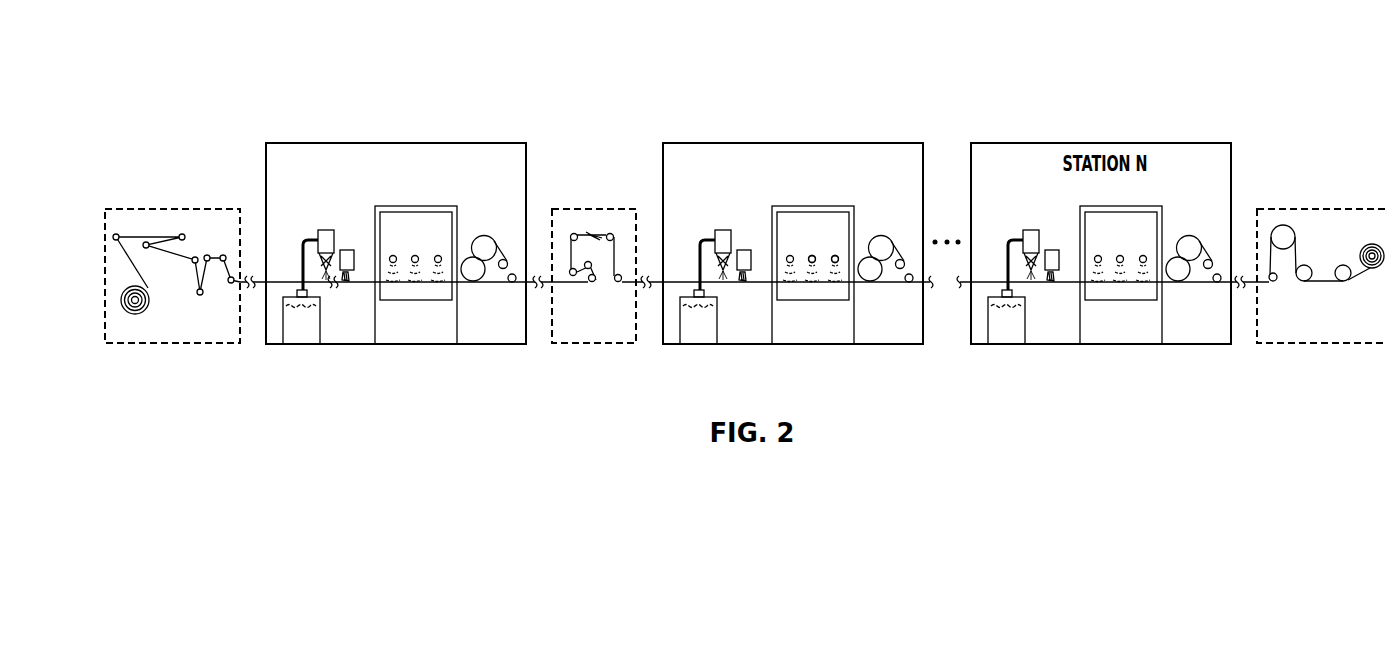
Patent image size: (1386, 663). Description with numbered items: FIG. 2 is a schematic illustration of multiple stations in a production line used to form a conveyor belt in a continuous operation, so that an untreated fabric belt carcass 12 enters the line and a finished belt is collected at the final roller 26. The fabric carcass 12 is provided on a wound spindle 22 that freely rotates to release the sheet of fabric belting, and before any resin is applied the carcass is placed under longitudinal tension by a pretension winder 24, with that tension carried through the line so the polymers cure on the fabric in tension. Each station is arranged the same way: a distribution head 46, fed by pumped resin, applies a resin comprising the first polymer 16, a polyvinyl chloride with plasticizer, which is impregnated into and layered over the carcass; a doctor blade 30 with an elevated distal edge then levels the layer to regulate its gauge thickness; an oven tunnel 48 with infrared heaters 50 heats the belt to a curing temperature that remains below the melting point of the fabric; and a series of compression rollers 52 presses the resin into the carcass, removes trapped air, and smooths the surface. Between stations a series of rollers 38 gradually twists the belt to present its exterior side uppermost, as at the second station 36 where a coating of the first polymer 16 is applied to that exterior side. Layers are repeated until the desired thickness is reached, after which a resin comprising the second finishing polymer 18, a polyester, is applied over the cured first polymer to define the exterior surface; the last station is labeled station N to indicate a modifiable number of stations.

The belt carcass 12 is at (132, 268).
The first polymer 16 is at (301, 330).
The second finishing polymer 18 is at (1007, 330).
The wound spindle 22 is at (145, 312).
The pretension winder 24 is at (176, 206).
The final roller 26 is at (395, 140).
The doctor blade 30 is at (345, 279).
The second station 36 is at (798, 140).
The series of rollers 38 is at (598, 208).
The distribution head 46 is at (325, 240).
The oven tunnel 48 is at (430, 208).
The infrared heaters 50 is at (813, 256).
The compression rollers 52 is at (501, 221).